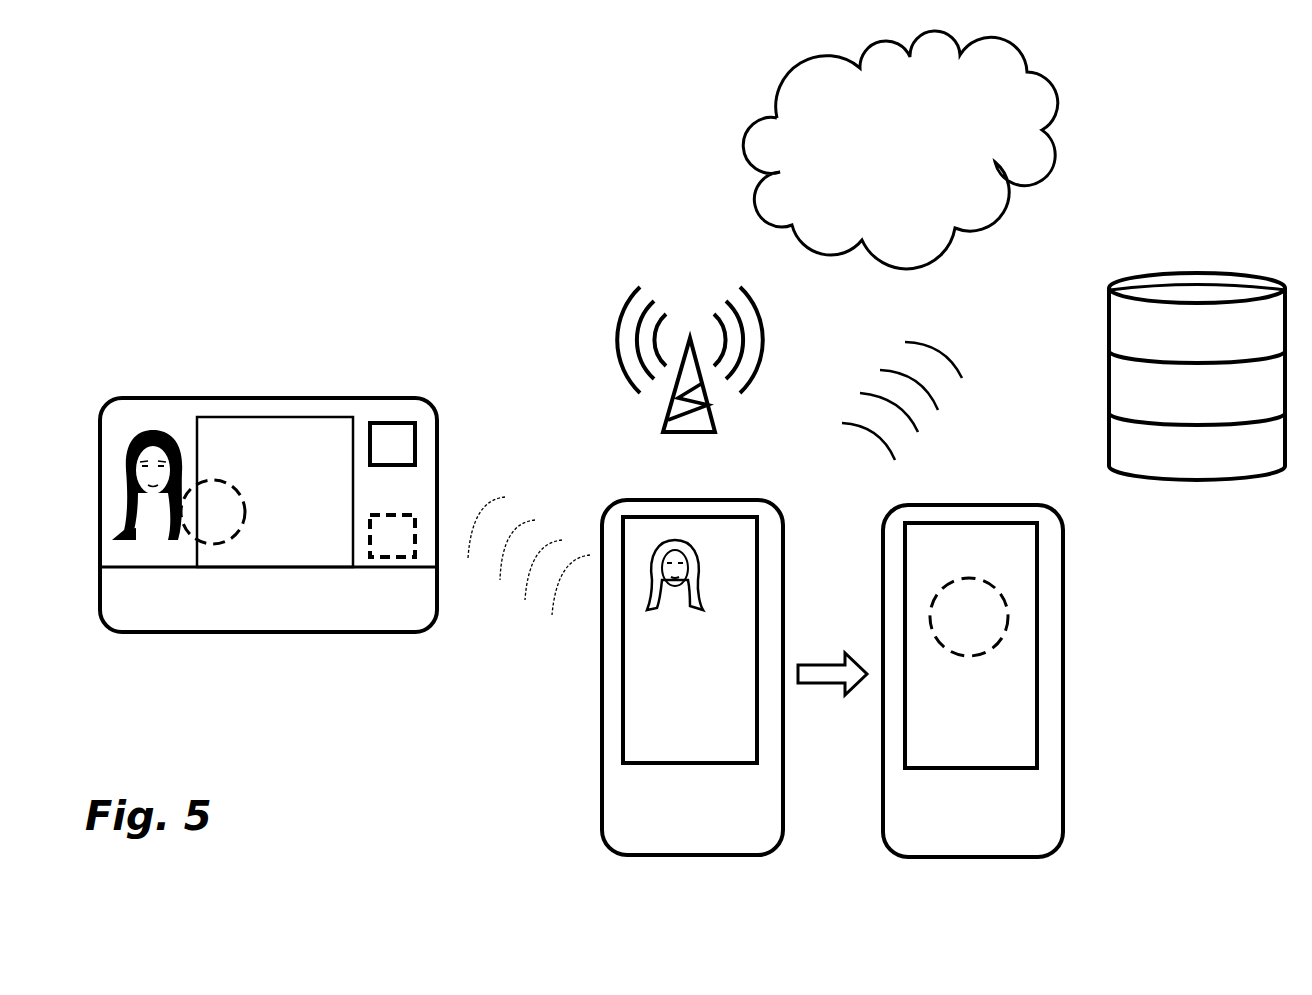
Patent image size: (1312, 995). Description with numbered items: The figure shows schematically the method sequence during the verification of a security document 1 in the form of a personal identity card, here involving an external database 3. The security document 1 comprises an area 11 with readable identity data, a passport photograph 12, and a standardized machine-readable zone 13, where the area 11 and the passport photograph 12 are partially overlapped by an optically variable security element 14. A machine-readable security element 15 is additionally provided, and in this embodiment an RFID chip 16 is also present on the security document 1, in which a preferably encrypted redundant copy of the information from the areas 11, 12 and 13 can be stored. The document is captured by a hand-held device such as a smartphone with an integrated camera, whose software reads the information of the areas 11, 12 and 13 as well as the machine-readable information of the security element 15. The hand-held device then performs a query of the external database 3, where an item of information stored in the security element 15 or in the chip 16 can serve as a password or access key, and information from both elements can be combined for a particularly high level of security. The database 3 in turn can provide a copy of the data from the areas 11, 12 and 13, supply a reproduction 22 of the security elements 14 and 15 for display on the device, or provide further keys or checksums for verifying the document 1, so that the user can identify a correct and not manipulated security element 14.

The security document 1 is at (402, 363).
The area with readable identity data 11 is at (280, 413).
The passport photograph 12 is at (150, 432).
The machine-readable zone 13 is at (236, 613).
The optically variable security element 14 is at (190, 547).
The machine-readable security element 15 is at (390, 547).
The RFID chip 16 is at (397, 447).
The reproduction of the security element 22 is at (1008, 600).
The external database 3 is at (1208, 270).